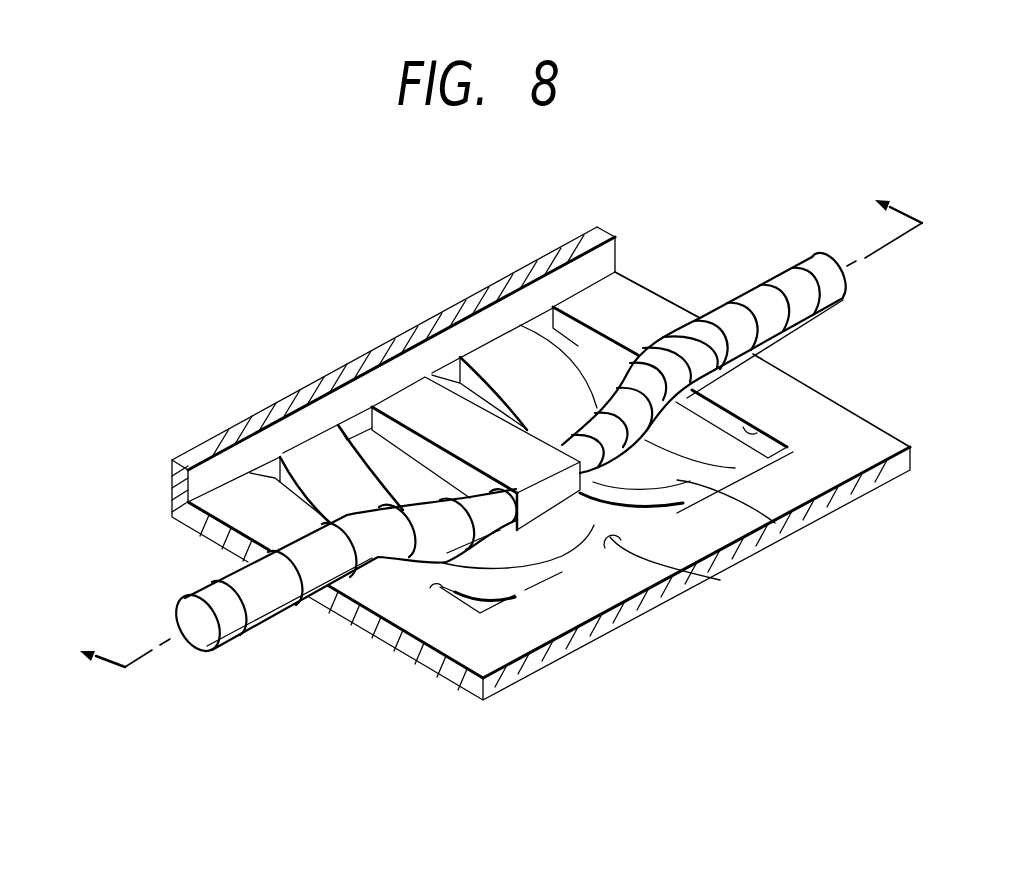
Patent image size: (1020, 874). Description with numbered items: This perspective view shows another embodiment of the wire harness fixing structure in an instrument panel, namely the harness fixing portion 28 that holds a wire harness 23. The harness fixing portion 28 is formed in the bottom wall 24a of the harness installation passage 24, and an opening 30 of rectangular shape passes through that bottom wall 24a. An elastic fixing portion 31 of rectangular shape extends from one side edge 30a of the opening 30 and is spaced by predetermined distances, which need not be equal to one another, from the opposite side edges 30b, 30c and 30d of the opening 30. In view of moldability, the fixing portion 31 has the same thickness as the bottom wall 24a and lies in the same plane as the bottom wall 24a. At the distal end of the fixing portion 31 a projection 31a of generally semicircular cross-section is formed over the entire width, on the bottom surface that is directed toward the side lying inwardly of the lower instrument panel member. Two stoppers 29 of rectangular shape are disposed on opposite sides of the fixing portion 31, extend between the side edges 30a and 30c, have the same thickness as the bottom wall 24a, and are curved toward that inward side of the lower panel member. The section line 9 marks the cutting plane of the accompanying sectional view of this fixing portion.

The section line 9- 9 is at (486, 419).
The wire 23 is at (770, 298).
The harness installation passage 24 is at (560, 278).
The bottom wall 24a is at (507, 654).
The harness fixing portion 28 is at (425, 292).
The stopper 29 is at (775, 523).
The opening 30 is at (583, 360).
The side edge 30a is at (340, 426).
The side edge 30b is at (429, 590).
The side edge 30c is at (700, 572).
The side edge 30d is at (757, 433).
The elastic fixing portion 31 is at (432, 402).
The projection 31a is at (608, 542).